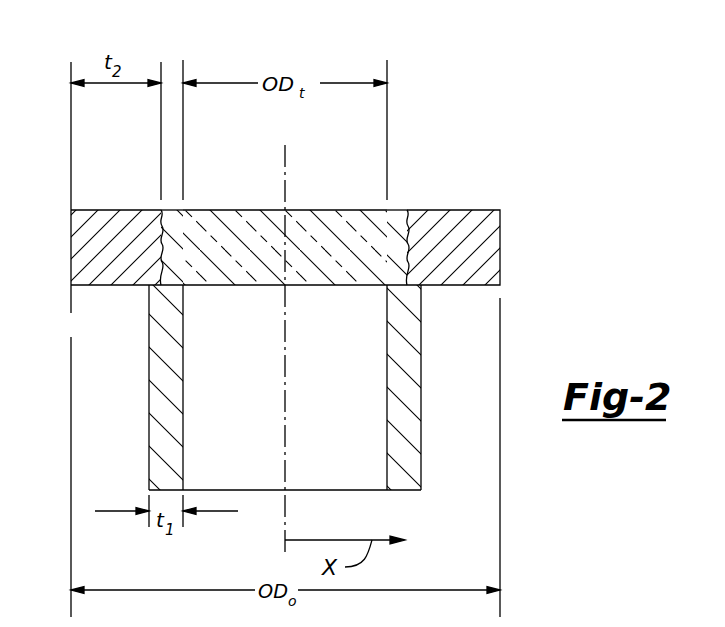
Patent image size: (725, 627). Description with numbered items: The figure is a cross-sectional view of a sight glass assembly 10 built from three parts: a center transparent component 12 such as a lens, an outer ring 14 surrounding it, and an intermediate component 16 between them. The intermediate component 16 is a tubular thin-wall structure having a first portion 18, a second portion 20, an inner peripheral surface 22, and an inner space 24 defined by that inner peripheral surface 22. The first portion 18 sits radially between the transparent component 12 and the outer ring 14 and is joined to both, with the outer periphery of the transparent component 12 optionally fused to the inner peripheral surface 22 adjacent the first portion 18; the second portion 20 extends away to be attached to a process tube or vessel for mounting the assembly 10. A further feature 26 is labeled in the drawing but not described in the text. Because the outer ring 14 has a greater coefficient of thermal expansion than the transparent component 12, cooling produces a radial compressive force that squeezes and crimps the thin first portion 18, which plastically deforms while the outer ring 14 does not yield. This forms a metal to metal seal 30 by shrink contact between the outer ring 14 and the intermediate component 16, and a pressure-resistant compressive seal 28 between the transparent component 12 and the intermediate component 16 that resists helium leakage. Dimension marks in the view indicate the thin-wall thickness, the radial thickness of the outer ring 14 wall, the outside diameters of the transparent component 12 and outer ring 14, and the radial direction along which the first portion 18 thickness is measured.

The sight glass assembly 10 is at (468, 125).
The transparent component 12 is at (250, 210).
The outer ring 14 is at (100, 210).
The intermediate component 16 is at (150, 357).
The first portion 18 is at (171, 210).
The second portion 20 is at (149, 427).
The inner peripheral surface 22 is at (183, 390).
The inner space 24 is at (350, 400).
The tube second end portion 26 is at (393, 222).
The compressive seal 28 is at (183, 272).
The metal to metal seal 30 is at (407, 218).